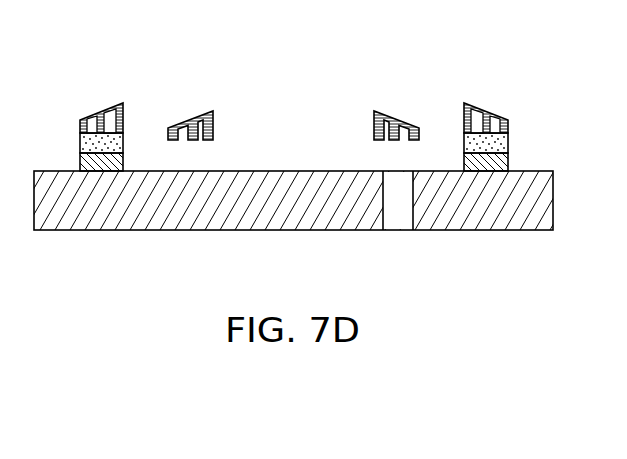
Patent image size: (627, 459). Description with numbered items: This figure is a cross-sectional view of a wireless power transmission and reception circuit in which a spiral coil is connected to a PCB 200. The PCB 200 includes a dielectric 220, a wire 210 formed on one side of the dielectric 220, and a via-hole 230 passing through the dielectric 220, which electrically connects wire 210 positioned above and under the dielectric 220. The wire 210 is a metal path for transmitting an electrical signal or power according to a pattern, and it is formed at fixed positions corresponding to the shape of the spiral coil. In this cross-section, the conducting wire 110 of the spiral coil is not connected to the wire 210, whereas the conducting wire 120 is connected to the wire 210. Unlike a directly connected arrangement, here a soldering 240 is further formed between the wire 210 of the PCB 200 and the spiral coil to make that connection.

The conducting wire 110 is at (374, 113).
The conducting wire 120 is at (464, 130).
The PCB 200 is at (306, 162).
The wire 210 is at (508, 162).
The dielectric 220 is at (540, 203).
The via-hole 230 is at (397, 222).
The soldering 240 is at (508, 140).